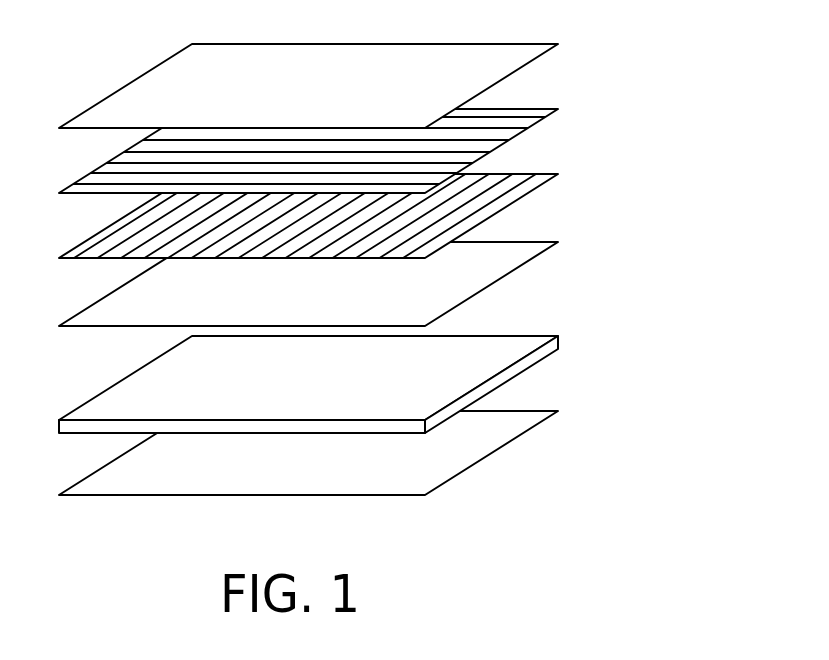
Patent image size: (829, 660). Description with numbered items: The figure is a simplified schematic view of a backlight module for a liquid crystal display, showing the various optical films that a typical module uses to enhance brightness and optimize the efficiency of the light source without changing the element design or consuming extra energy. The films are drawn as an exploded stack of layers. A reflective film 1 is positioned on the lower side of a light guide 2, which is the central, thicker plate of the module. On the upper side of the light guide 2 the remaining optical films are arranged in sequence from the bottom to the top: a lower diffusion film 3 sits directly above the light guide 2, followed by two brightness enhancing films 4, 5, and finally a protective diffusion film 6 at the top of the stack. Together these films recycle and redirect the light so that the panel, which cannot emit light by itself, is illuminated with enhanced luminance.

The reflective film 1 is at (513, 423).
The light guide 2 is at (512, 345).
The lower diffusion film 3 is at (517, 255).
The brightness enhancing film 4 is at (515, 185).
The brightness enhancing film 5 is at (515, 127).
The protective diffusion film 6 is at (515, 58).